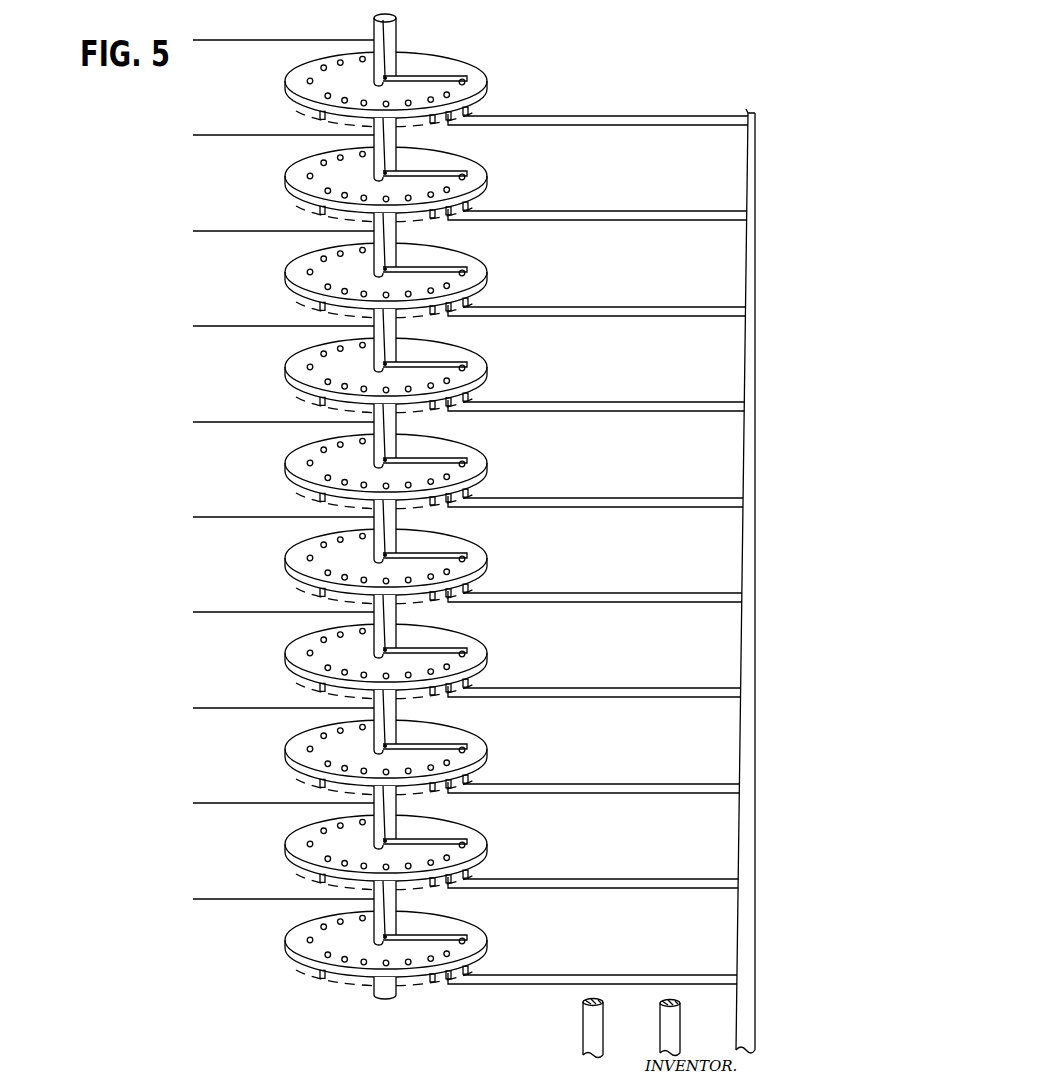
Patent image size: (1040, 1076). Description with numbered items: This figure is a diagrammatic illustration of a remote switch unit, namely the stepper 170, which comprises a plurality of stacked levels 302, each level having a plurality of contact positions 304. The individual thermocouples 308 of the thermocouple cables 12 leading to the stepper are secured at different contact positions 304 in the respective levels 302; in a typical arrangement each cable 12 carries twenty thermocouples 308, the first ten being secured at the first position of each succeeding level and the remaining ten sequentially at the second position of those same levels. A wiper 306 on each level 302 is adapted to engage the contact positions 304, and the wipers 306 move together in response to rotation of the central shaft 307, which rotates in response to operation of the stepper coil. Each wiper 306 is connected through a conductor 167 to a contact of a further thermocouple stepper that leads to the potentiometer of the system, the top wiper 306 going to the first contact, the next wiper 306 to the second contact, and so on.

The stepper 170 is at (155, 293).
The level 302 is at (290, 79).
The contact position 304 is at (304, 101).
The wiper 306 is at (466, 76).
The shaft 307 is at (397, 38).
The conductor 167 is at (206, 40).
The thermocouple 308 is at (669, 114).
The thermocouple cable 12 is at (598, 1032).